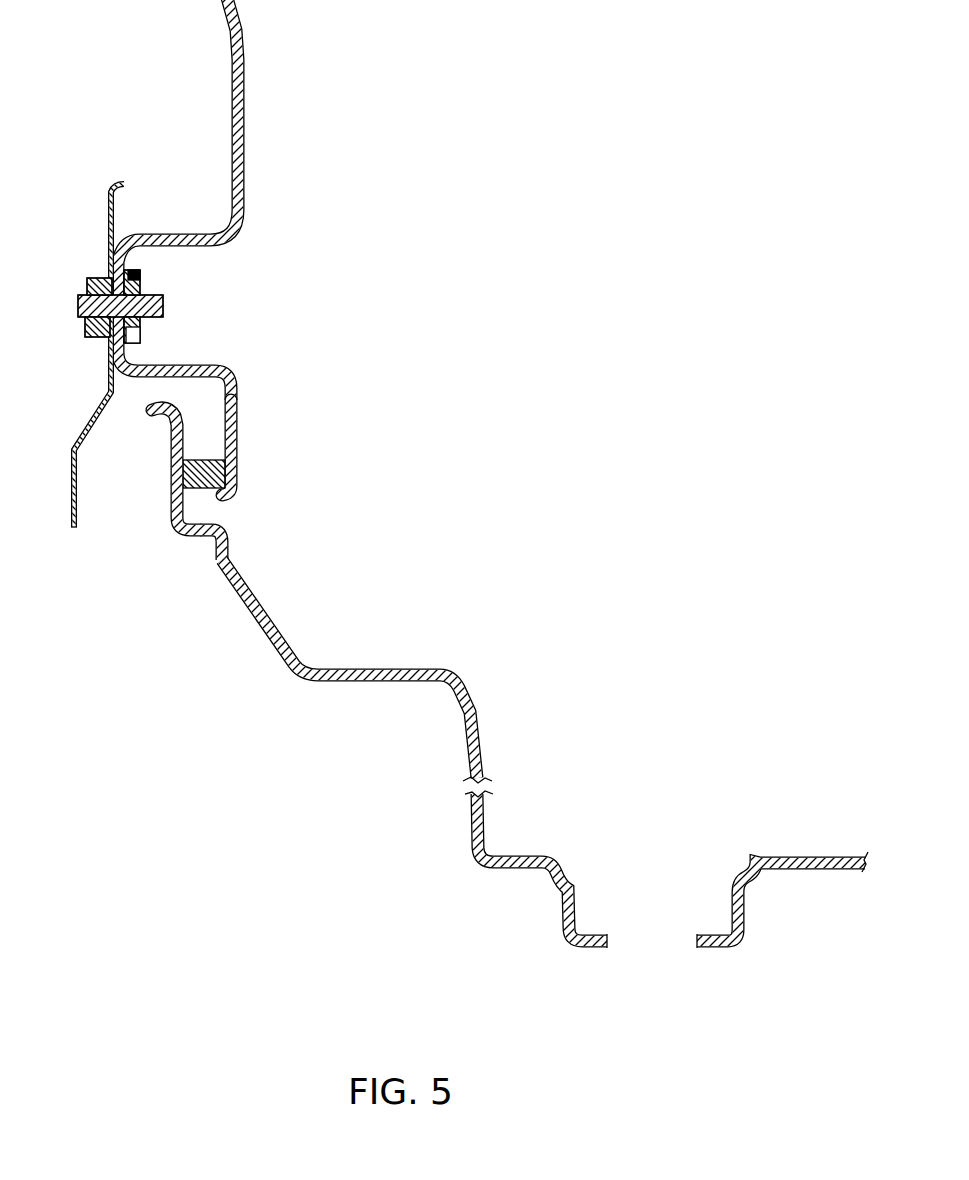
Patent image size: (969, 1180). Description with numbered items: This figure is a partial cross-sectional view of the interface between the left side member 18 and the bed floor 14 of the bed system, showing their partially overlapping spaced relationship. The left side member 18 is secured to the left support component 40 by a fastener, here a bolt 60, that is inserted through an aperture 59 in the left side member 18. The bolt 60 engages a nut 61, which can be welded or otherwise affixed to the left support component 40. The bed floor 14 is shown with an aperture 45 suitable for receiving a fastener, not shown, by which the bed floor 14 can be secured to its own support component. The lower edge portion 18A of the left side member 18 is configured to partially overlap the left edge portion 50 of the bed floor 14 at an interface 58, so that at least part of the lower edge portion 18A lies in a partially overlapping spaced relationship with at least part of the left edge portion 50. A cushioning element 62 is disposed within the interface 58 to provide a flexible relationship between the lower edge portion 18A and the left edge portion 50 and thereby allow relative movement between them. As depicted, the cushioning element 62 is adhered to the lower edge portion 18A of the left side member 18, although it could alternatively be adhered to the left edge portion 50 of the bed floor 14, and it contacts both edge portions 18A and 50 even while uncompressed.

The bed floor 14 is at (545, 754).
The left side member 18 is at (252, 200).
The lower edge portion 18A is at (298, 447).
The left support component 40 is at (126, 385).
The aperture 45 is at (608, 942).
The left edge portion 50 is at (125, 451).
The interface 58 is at (267, 542).
The aperture 59 is at (139, 288).
The bolt 60 is at (164, 306).
The nut 61 is at (95, 277).
The cushioning element 62 is at (202, 459).